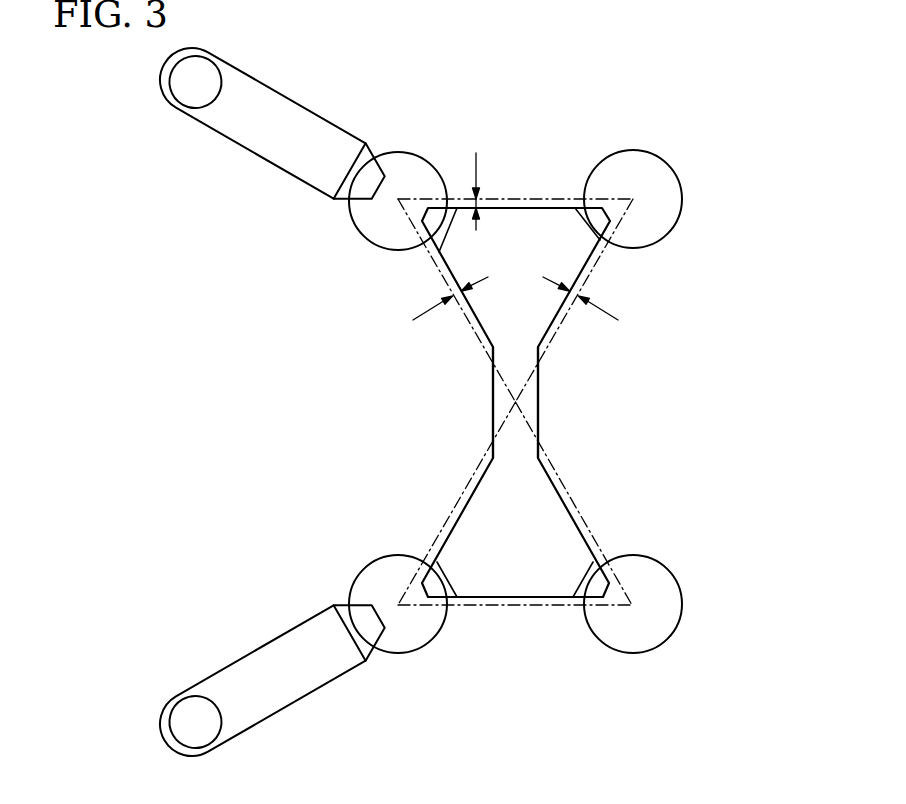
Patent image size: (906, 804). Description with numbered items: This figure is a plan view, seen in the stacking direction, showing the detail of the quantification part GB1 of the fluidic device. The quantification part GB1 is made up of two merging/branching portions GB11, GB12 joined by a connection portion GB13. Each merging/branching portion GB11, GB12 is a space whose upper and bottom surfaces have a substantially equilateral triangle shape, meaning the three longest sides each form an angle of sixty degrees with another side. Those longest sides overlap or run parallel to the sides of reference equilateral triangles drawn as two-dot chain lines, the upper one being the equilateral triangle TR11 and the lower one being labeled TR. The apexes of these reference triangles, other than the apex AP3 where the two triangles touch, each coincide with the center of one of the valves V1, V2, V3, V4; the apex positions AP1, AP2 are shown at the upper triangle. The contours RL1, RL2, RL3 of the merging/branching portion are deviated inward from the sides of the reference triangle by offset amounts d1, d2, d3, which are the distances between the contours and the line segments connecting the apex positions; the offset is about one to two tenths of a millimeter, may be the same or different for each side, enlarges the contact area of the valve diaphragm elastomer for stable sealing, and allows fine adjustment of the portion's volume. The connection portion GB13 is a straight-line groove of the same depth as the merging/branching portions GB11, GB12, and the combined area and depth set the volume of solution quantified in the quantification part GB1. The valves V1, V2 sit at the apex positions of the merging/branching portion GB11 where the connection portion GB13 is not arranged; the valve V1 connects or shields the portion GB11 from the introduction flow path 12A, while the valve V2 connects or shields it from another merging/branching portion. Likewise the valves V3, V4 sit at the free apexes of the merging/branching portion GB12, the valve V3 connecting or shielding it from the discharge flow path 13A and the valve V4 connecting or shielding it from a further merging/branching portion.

The introduction flow path 12A is at (303, 118).
The discharge flow path 13A is at (302, 680).
The valve V1 is at (405, 152).
The valve V2 is at (668, 155).
The valve V3 is at (371, 560).
The valve V4 is at (673, 632).
The equilateral triangle TR11 is at (510, 247).
The drive part TR is at (515, 617).
The contour RL1 is at (540, 200).
The contour RL2 is at (437, 262).
The contour RL3 is at (592, 273).
The apex position AP1 is at (649, 199).
The apex position AP2 is at (389, 208).
The apex position AP3 is at (532, 401).
The quantification part GB1 is at (545, 402).
The merging/branching portion GB11 is at (542, 254).
The merging/branching portion GB12 is at (545, 575).
The connection portion GB13 is at (497, 402).
The offset amount d1 is at (464, 191).
The offset amount d2 is at (444, 298).
The offset amount d3 is at (586, 298).